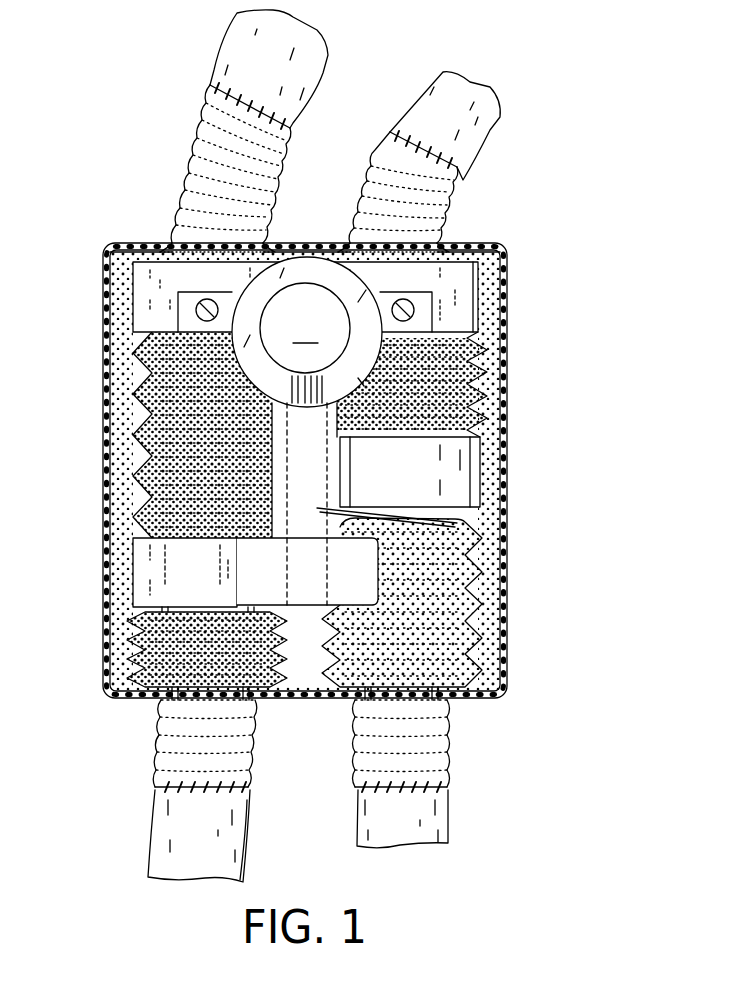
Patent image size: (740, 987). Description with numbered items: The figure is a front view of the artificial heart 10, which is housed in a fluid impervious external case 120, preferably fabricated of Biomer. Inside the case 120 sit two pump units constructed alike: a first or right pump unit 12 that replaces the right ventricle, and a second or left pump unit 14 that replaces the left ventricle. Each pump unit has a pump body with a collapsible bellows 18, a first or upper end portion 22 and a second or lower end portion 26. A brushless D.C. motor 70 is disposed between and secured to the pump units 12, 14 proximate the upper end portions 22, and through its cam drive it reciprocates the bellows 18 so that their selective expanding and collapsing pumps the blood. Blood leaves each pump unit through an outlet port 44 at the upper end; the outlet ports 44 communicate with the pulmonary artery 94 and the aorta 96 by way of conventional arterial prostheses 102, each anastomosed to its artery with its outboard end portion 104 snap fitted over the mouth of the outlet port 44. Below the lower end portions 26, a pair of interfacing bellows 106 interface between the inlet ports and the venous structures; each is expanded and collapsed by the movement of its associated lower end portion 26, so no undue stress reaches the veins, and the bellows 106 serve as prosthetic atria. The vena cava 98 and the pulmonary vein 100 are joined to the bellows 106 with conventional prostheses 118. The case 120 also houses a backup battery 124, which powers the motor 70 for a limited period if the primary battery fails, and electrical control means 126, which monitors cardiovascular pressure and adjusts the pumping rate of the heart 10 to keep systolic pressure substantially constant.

The heart 10 is at (521, 230).
The first or right pump unit 12 is at (136, 425).
The second or left pump unit 14 is at (490, 373).
The collapsible bellows 18 is at (146, 470).
The first or upper end portion 22 is at (150, 308).
The second or lower end portion 26 is at (470, 468).
The outlet port 44 is at (170, 245).
The motor 70 is at (307, 332).
The pulmonary artery 94 is at (245, 63).
The aorta 96 is at (438, 92).
The vena cava 98 is at (165, 835).
The pulmonary vein 100 is at (440, 826).
The arterial prosthesis 102 is at (182, 145).
The outboard end portion 104 is at (172, 243).
The interfacing bellows 106 is at (135, 640).
The prostheses 118 is at (157, 760).
The external case 120 is at (105, 375).
The backup battery 124 is at (475, 528).
The electrical control means 126 is at (357, 572).